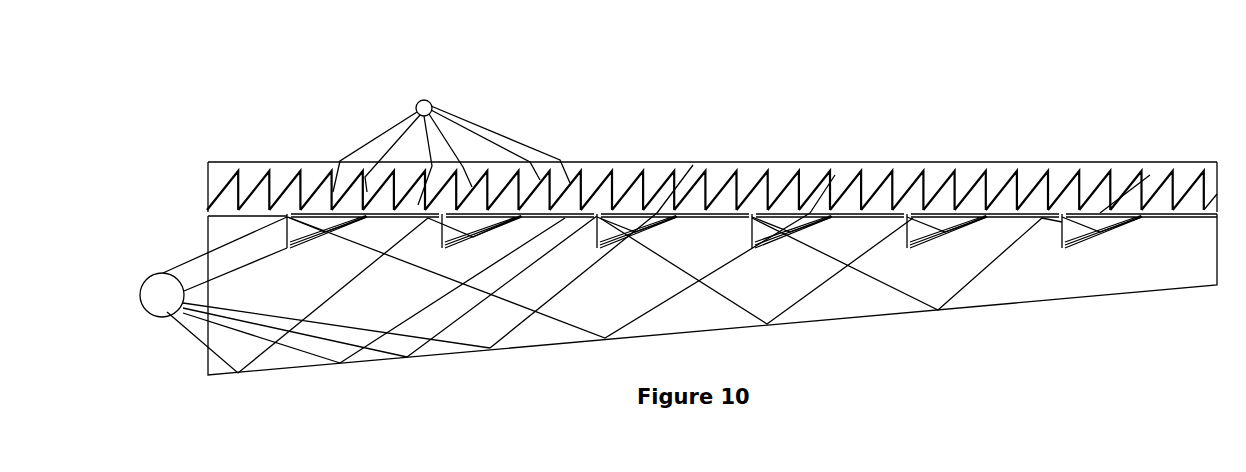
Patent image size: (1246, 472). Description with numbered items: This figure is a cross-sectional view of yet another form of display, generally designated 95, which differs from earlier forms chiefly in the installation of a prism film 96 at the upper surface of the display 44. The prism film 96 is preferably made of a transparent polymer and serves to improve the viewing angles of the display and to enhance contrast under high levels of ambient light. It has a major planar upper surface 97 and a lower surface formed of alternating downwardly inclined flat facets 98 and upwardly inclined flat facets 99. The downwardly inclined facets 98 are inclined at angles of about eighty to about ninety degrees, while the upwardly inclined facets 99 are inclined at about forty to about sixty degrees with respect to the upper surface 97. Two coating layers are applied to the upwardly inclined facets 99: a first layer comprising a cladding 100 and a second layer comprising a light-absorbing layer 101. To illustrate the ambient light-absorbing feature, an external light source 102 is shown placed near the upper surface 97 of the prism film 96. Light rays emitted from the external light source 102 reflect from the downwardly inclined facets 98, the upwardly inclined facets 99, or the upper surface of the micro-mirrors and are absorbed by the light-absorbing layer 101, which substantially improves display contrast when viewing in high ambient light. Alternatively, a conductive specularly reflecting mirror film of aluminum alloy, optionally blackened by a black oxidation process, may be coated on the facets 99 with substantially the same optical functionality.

The display 95 is at (253, 120).
The prism film 96 is at (945, 107).
The major planar upper surface 97 is at (1173, 162).
The downwardly inclined flat facets 98 is at (667, 175).
The upwardly inclined flat facets 99 is at (690, 185).
The cladding 100 is at (973, 188).
The light-absorbing layer 101 is at (372, 172).
The external light source 102 is at (431, 101).
The display 44 is at (925, 359).